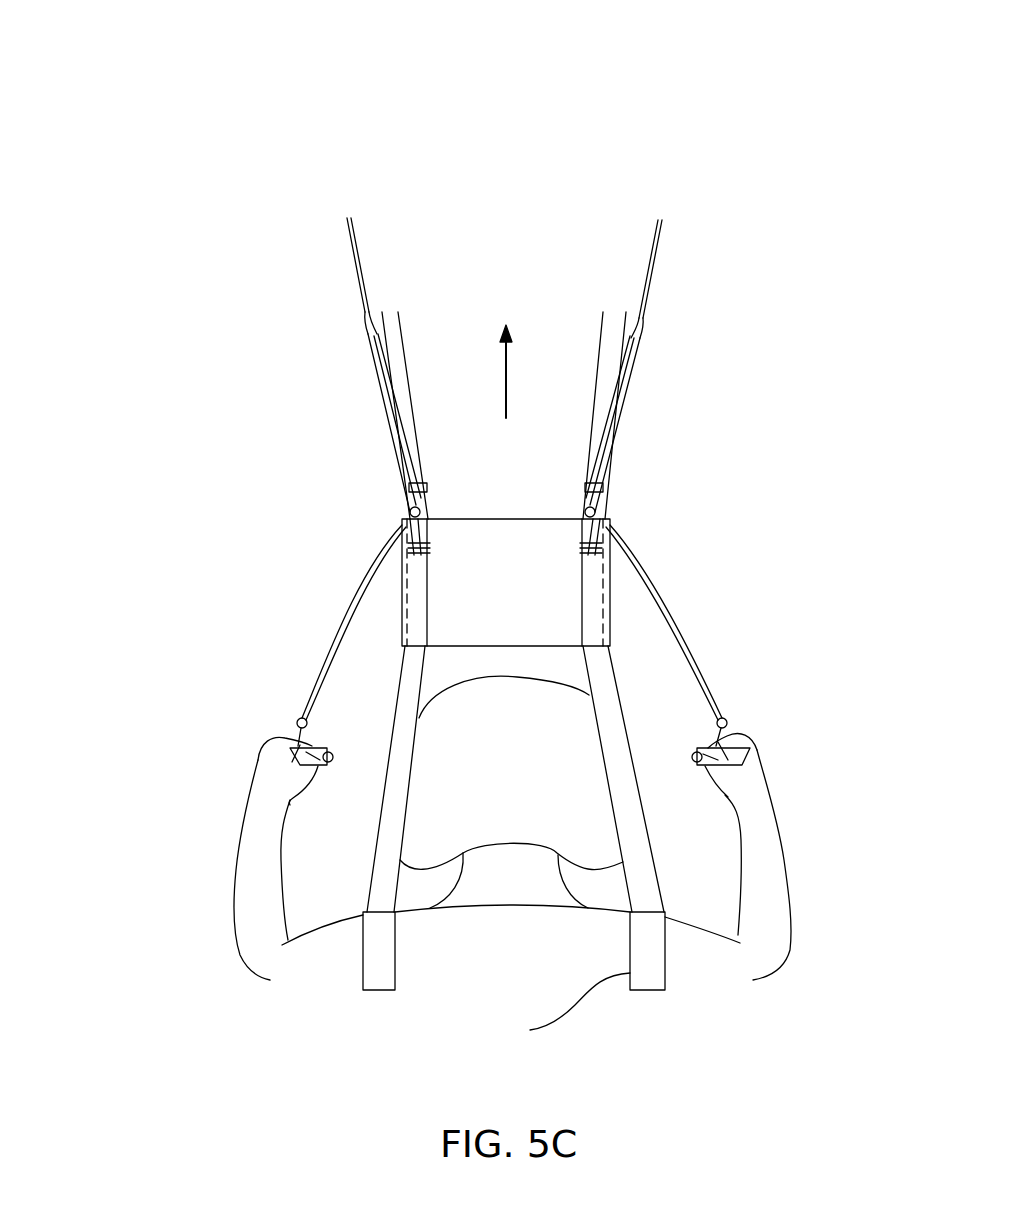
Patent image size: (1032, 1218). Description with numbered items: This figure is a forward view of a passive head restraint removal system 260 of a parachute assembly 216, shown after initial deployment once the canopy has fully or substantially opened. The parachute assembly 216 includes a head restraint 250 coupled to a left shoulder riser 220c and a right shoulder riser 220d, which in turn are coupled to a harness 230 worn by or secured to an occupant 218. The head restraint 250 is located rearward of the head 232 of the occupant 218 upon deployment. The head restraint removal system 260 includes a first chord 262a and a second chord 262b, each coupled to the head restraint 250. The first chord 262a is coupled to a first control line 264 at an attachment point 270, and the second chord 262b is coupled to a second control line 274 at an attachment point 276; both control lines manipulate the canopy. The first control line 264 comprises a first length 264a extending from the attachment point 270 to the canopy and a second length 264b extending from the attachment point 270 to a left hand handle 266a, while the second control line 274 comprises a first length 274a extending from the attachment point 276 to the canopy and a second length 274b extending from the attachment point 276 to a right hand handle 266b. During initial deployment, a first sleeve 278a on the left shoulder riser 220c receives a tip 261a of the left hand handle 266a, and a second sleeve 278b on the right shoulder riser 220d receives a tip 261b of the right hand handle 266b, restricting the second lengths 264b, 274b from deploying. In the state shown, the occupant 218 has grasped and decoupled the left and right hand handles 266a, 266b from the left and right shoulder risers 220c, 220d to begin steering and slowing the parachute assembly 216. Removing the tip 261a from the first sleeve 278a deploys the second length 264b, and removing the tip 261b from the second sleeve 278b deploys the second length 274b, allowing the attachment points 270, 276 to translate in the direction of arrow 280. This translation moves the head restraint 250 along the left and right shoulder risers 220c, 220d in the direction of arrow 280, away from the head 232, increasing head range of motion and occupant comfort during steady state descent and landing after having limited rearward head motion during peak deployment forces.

The parachute assembly 216 is at (245, 35).
The occupant 218 is at (212, 812).
The left shoulder riser 220c is at (385, 852).
The right shoulder riser 220d is at (638, 833).
The harness 230 is at (393, 973).
The head 232 is at (524, 756).
The head restraint 250 is at (519, 591).
The head restraint removal system 260 is at (608, 105).
The tip 261a is at (330, 756).
The tip 261b is at (690, 755).
The first chord 262a is at (383, 412).
The second chord 262b is at (628, 428).
The first control line 264 is at (357, 200).
The first length 264a is at (352, 257).
The second length 264b is at (355, 603).
The left hand handle 266a is at (297, 745).
The right hand handle 266b is at (743, 752).
The attachment point 270 is at (345, 335).
The second control line 274 is at (672, 205).
The first length 274a is at (655, 278).
The second length 274b is at (663, 603).
The attachment point 276 is at (672, 322).
The first sleeve 278a is at (425, 487).
The second sleeve 278b is at (587, 487).
The arrow 280 is at (511, 383).